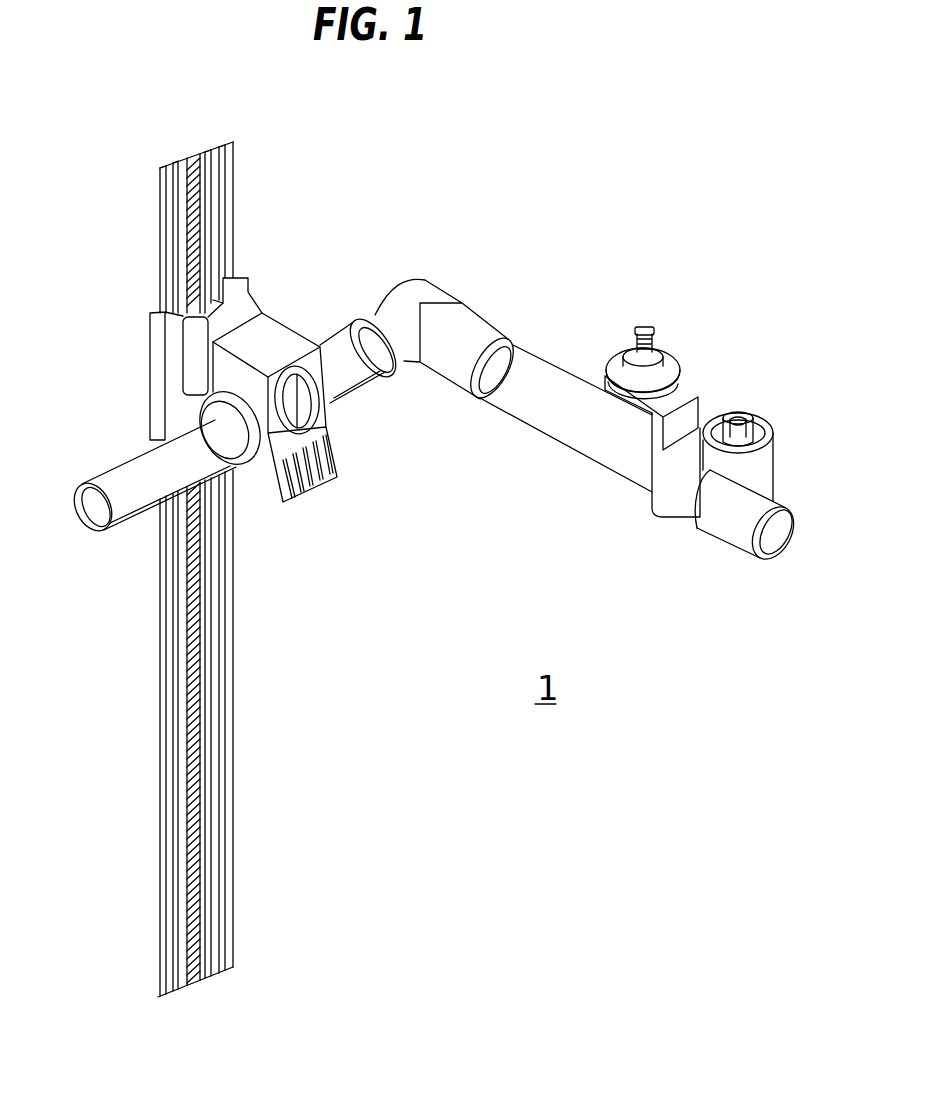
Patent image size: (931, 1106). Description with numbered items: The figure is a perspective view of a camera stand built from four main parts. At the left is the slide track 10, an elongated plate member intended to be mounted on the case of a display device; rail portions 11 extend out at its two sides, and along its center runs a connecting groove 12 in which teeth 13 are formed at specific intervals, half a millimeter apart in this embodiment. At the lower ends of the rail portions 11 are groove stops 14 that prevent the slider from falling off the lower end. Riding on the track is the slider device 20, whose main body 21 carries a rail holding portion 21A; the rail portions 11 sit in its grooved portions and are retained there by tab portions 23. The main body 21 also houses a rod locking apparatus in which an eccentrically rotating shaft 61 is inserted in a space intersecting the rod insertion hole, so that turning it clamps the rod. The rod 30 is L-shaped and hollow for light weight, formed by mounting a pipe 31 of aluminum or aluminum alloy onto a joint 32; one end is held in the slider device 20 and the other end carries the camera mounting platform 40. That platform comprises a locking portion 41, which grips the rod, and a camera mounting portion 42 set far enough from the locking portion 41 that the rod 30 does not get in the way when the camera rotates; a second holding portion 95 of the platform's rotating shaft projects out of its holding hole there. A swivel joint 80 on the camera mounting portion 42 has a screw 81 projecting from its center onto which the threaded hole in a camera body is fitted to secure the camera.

The slide track 10 is at (202, 568).
The rail portion 11 is at (170, 192).
The connecting groove 12 is at (200, 822).
The teeth 13 is at (193, 905).
The groove stop 14 is at (242, 958).
The slider device 20 is at (246, 430).
The main body 21 is at (270, 335).
The rail holding portion 21A is at (172, 340).
The tab portion 23 is at (155, 308).
The rod 30 is at (441, 280).
The pipe 31 is at (123, 464).
The joint 32 is at (462, 328).
The camera mounting platform 40 is at (691, 443).
The locking portion 41 is at (677, 489).
The camera mounting portion 42 is at (689, 397).
The eccentrically rotating shaft 61 is at (303, 400).
The swivel joint 80 is at (670, 325).
The screw 81 is at (657, 327).
The second holding portion 95 is at (745, 414).